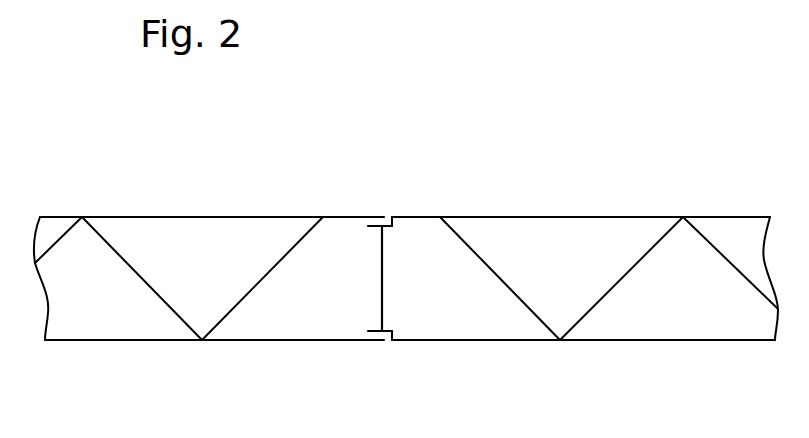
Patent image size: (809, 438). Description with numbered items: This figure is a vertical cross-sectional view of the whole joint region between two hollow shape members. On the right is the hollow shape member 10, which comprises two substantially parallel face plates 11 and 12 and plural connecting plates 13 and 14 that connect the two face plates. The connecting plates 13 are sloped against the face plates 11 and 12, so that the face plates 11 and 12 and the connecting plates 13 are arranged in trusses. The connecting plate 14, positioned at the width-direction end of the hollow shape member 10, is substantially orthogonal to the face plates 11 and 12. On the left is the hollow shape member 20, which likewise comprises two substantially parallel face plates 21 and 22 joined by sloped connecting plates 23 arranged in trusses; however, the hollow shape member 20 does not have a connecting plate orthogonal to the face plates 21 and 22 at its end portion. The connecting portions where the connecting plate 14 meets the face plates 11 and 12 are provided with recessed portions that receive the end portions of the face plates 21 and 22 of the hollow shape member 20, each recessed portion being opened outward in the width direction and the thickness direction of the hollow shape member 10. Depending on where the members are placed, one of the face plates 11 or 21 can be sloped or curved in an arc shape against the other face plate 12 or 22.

The hollow shape member 10 is at (585, 271).
The face plate 11 is at (485, 216).
The face plate 12 is at (490, 340).
The connecting plate 13 is at (585, 313).
The connecting plate 14 is at (383, 285).
The hollow shape member 20 is at (209, 271).
The face plate 21 is at (275, 216).
The face plate 22 is at (305, 340).
The connecting plate 23 is at (230, 310).